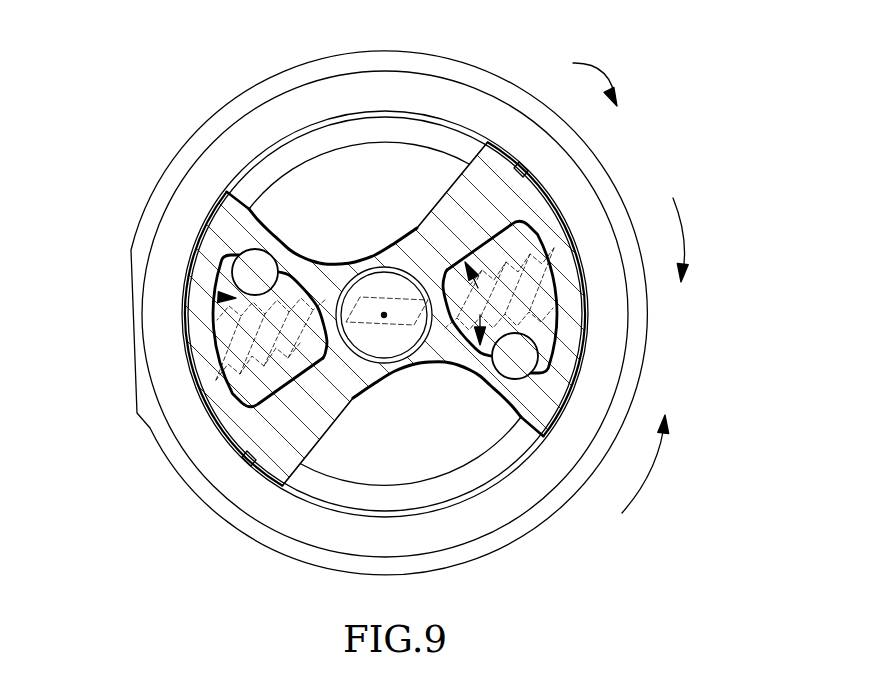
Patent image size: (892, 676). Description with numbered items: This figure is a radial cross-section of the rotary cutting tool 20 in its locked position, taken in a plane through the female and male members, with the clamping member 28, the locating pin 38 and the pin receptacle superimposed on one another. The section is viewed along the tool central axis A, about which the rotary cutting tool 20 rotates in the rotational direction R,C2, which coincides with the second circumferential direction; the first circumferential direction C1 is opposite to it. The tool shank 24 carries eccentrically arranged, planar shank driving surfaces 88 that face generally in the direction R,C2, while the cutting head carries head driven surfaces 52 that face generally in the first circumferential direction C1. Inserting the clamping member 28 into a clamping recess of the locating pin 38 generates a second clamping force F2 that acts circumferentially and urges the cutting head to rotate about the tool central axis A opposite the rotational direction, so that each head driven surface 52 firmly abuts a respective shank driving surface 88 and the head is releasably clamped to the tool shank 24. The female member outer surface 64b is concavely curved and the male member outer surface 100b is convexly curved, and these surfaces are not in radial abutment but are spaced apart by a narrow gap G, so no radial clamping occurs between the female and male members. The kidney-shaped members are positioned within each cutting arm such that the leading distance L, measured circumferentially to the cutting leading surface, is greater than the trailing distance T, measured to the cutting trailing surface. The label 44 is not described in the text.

The rotary cutting tool 20 is at (645, 55).
The tool shank 24 is at (162, 131).
The clamping member 28 is at (563, 237).
The locating pin 38 is at (375, 342).
The hub 44 is at (347, 270).
The head driven surface 52 is at (593, 250).
The female member outer surface 64b is at (188, 255).
The shank driving surface 88 is at (283, 392).
The male member outer surface 100b is at (220, 262).
The tool central axis A is at (384, 315).
The narrow gap G is at (220, 298).
The leading distance L is at (420, 222).
The trailing distance T is at (463, 371).
The second clamping force F2 is at (577, 73).
The first circumferential direction C1 is at (701, 240).
The rotational direction and second circumferential direction R,C2 is at (669, 464).